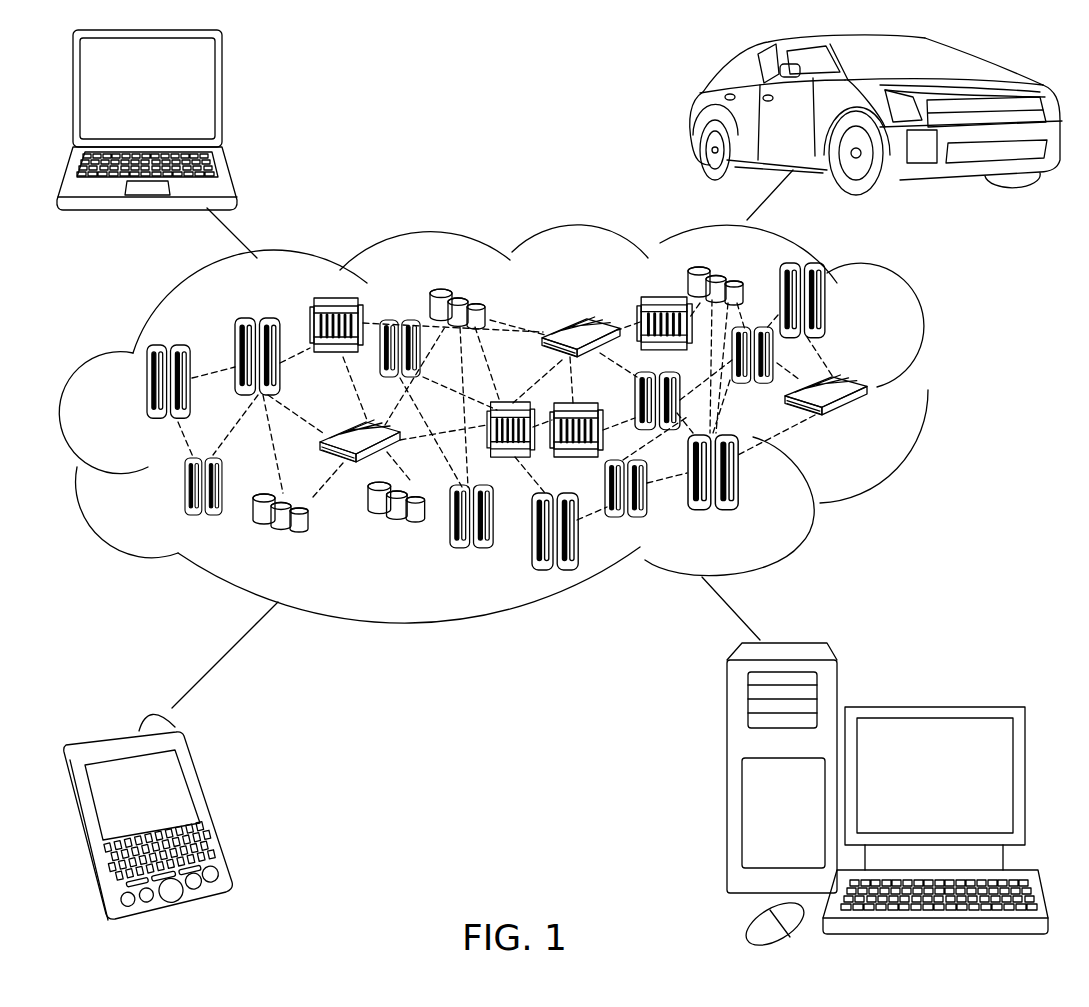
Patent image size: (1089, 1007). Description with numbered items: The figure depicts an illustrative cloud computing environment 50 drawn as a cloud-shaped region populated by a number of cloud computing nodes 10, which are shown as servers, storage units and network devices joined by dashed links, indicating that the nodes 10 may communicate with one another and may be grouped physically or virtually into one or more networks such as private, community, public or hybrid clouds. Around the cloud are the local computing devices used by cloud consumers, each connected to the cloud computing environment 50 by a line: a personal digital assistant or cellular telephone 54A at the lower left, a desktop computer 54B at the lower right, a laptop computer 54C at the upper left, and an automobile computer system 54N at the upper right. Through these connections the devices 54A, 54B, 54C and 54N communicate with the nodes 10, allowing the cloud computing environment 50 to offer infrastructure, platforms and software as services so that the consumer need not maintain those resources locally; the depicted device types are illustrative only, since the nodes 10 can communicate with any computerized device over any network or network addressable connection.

The cloud computing nodes 10 is at (865, 424).
The cloud computing environment 50 is at (935, 393).
The personal digital assistant (PDA) or cellular telephone 54A is at (210, 811).
The desktop computer 54B is at (930, 707).
The laptop computer 54C is at (222, 99).
The automobile computer system 54N is at (697, 118).